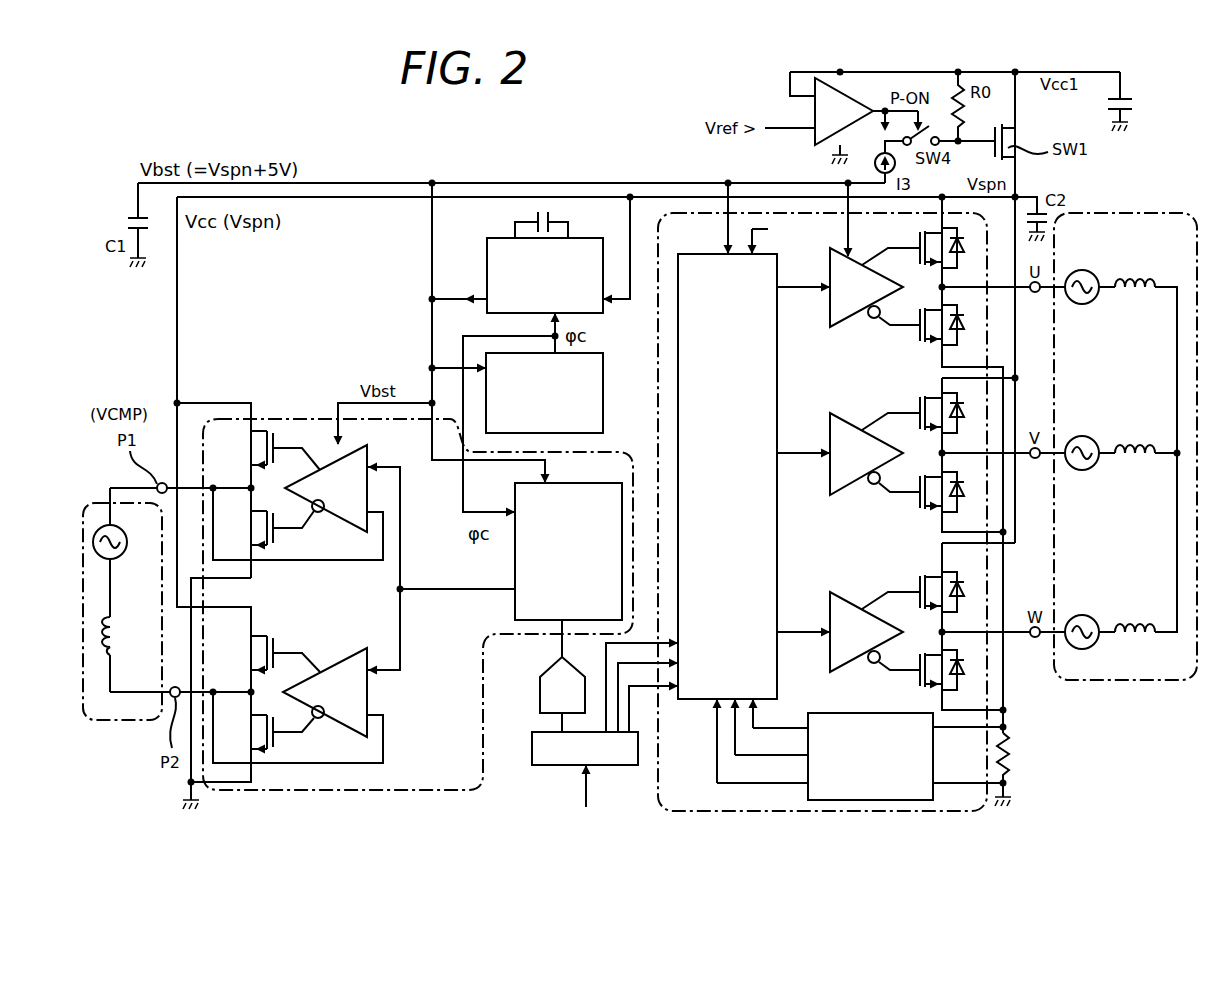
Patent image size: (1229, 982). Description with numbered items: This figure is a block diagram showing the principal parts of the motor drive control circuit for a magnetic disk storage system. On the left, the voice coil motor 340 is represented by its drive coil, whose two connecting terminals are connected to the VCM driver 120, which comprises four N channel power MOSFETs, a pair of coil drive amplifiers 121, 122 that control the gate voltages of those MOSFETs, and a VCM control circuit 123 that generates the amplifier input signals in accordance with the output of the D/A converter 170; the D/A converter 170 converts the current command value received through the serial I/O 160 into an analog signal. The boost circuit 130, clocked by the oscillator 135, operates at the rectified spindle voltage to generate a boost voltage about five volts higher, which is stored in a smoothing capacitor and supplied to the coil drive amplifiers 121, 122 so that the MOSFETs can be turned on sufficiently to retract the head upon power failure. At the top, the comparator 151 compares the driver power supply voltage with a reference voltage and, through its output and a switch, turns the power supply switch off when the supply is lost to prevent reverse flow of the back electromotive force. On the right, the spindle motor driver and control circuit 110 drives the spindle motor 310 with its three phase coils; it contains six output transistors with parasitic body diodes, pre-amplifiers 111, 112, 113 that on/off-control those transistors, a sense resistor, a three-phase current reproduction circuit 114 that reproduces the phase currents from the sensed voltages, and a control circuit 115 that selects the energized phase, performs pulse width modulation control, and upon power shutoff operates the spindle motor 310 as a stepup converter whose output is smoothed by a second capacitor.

The spindle motor driver & control circuit 110 is at (854, 458).
The pre-amplifier 111 is at (853, 318).
The pre-amplifier 112 is at (853, 485).
The pre-amplifier 113 is at (853, 605).
The three-phase current reproduction circuit 114 is at (885, 800).
The control circuit 115 is at (777, 383).
The VCM driver 120 is at (371, 503).
The coil drive amplifier 121 is at (322, 462).
The coil drive amplifier 122 is at (340, 650).
The VCM control circuit 123 is at (515, 557).
The boost circuit 130 is at (487, 265).
The oscillator 135 is at (603, 385).
The comparator 151 is at (812, 108).
The serial I/O 160 is at (548, 768).
The D/A converter 170 is at (540, 690).
The spindle motor 310 is at (1105, 682).
The voice coil motor 340 is at (120, 722).